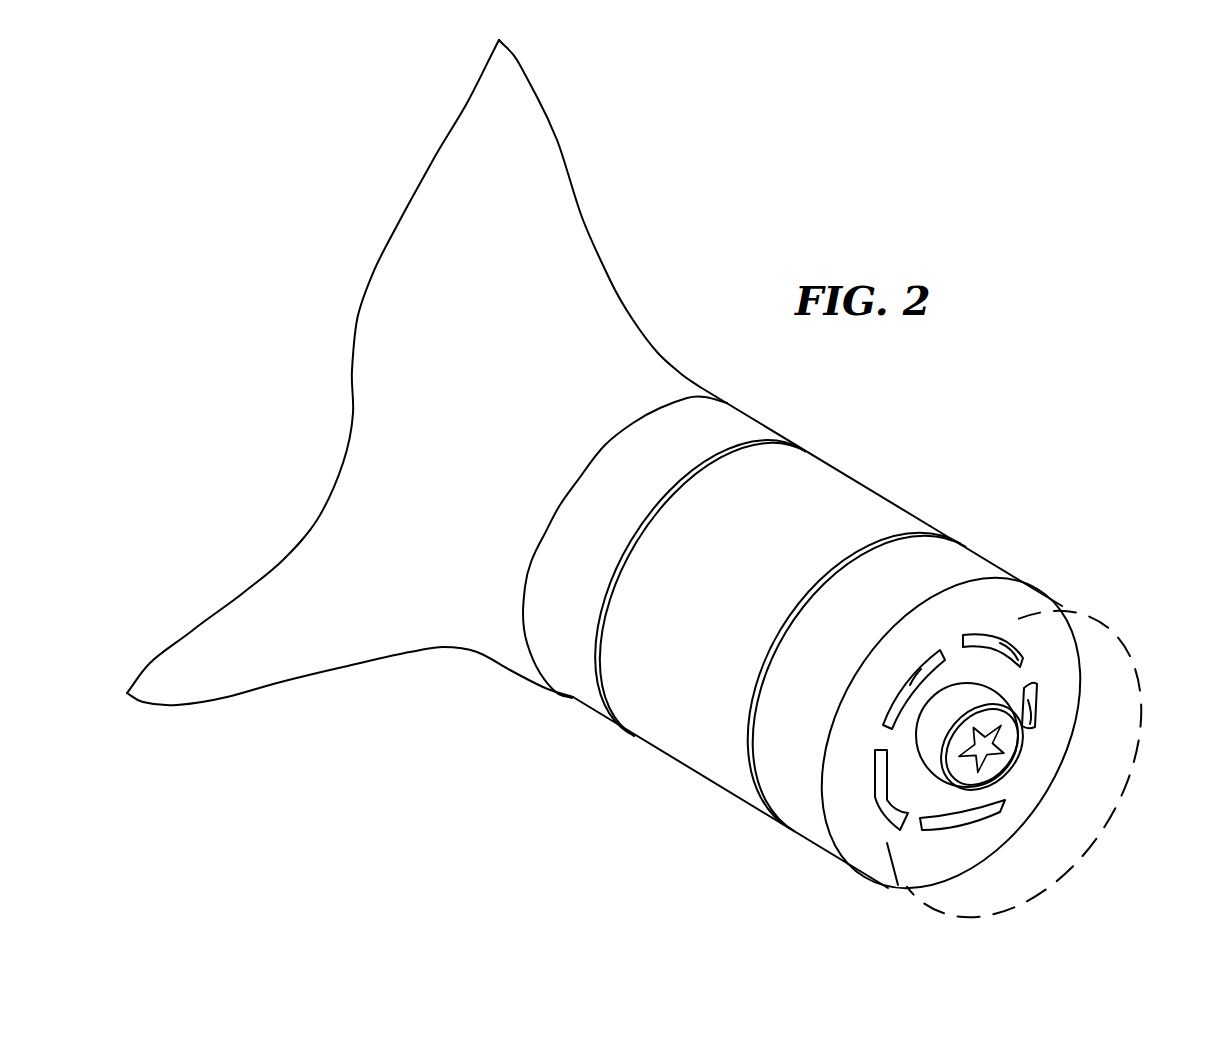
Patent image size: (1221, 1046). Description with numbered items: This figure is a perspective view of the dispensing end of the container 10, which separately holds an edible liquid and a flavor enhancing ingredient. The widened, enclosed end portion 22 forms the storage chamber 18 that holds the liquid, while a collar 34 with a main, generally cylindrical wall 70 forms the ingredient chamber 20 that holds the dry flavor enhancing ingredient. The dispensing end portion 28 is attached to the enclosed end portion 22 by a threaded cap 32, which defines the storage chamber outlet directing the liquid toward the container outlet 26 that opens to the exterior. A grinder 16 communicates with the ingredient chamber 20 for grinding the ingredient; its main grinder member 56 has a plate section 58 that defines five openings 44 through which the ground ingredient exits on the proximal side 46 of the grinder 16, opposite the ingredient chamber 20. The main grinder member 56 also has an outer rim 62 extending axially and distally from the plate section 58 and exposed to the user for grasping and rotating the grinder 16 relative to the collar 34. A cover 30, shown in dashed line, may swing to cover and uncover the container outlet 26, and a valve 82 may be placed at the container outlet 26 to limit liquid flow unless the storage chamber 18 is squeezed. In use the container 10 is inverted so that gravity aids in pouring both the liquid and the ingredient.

The container 10 is at (304, 254).
The grinder 16 is at (810, 825).
The storage chamber 18 is at (545, 285).
The ingredient chamber 20 is at (685, 750).
The enclosed end portion 22 is at (533, 130).
The container outlet 26 is at (1012, 760).
The dispensing end portion 28 is at (668, 864).
The cover 30 is at (1010, 915).
The threaded cap 32 is at (583, 695).
The collar 34 is at (735, 603).
The openings 44 is at (927, 652).
The proximal side 46 is at (1067, 700).
The main grinder member 56 is at (997, 567).
The plate section 58 is at (1027, 803).
The outer rim 62 is at (948, 563).
The cylindrical wall 70 is at (833, 485).
The valve 82 is at (993, 770).